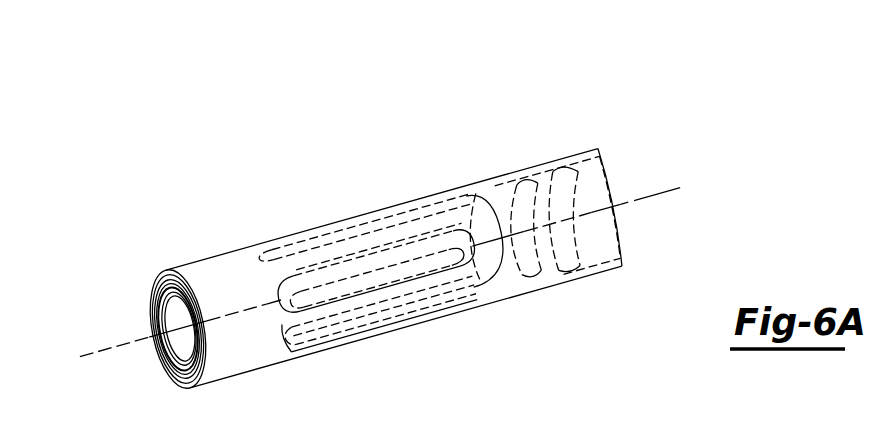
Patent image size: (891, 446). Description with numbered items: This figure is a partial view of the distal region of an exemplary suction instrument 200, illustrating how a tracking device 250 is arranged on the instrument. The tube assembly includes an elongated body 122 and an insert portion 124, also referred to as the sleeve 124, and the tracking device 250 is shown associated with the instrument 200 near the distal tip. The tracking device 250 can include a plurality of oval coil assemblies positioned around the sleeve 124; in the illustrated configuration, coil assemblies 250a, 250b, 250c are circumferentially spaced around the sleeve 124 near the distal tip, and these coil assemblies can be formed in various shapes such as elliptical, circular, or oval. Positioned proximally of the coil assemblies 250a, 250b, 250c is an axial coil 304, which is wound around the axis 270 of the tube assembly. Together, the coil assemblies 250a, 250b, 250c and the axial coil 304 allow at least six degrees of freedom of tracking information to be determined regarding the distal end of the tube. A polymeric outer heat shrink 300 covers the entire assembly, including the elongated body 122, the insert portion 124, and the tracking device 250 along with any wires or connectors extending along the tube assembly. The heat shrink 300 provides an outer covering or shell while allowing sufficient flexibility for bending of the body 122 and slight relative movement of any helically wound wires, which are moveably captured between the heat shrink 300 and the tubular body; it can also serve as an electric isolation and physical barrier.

The instrument 200 is at (517, 114).
The insert portion 124 is at (207, 287).
The outer heat shrink 300 is at (175, 270).
The axis 270 is at (658, 193).
The elongated body 122 is at (585, 263).
The tracking device 250 is at (300, 203).
The coil assembly 250a is at (442, 195).
The coil assembly 250b is at (280, 323).
The coil assembly 250c is at (385, 325).
The axial coil 304 is at (515, 270).